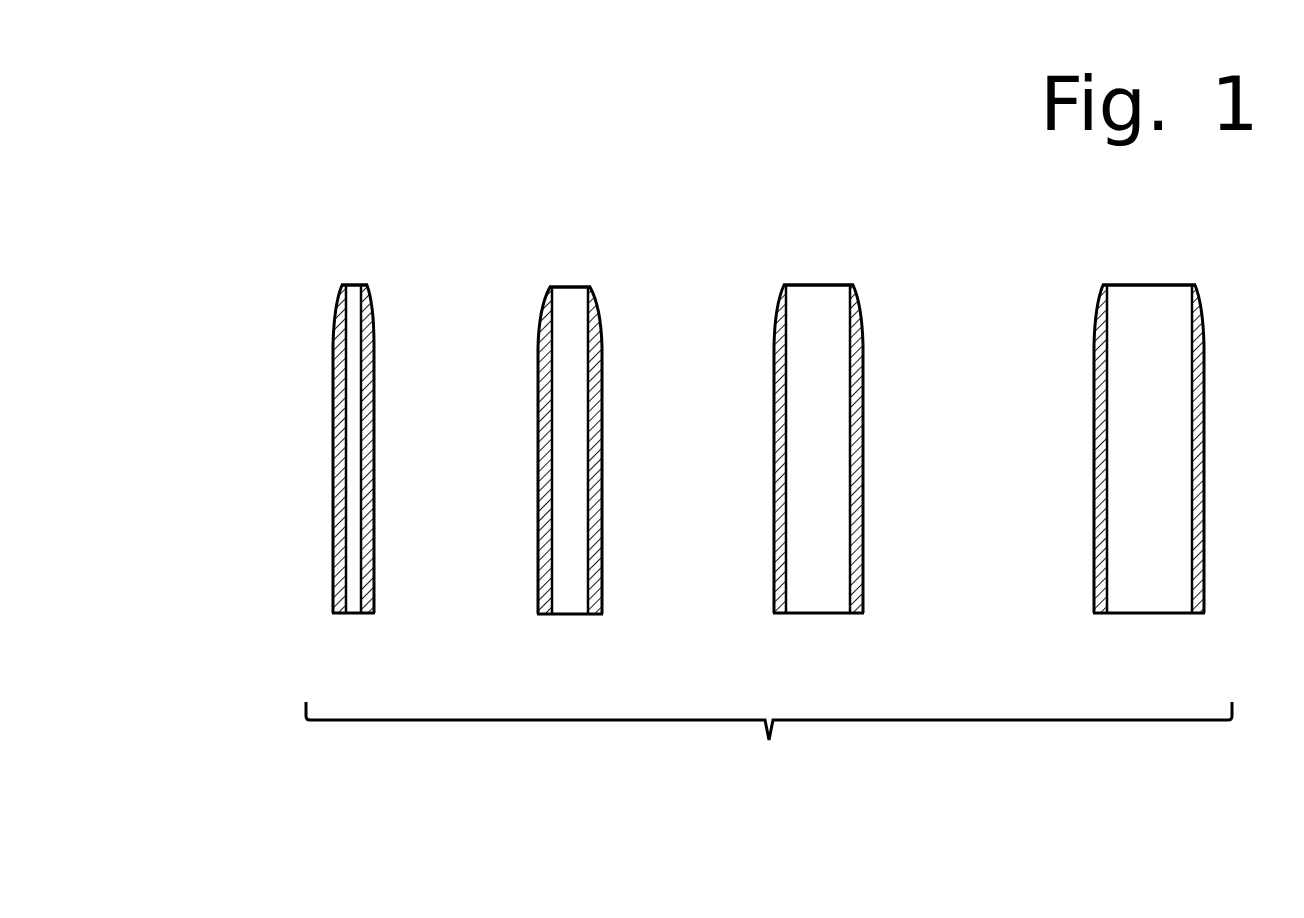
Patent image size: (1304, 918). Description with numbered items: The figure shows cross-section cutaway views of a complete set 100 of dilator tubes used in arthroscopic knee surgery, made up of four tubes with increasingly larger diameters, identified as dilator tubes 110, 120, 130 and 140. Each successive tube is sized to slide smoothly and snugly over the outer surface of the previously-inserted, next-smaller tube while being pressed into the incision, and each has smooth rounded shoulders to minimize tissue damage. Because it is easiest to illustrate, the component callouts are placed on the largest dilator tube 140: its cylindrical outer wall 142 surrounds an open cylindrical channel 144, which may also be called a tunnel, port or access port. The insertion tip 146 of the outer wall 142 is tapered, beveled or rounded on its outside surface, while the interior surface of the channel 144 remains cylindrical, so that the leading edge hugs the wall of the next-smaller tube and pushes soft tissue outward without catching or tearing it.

The set of dilator tubes 100 is at (769, 751).
The dilator tube 110 is at (315, 318).
The dilator tube 120 is at (538, 305).
The dilator tube 130 is at (765, 310).
The dilator tube 140 is at (1095, 282).
The cylindrical outer wall 142 is at (1087, 592).
The cylindrical channel 144 is at (1142, 493).
The insertion tip 146 is at (1093, 308).